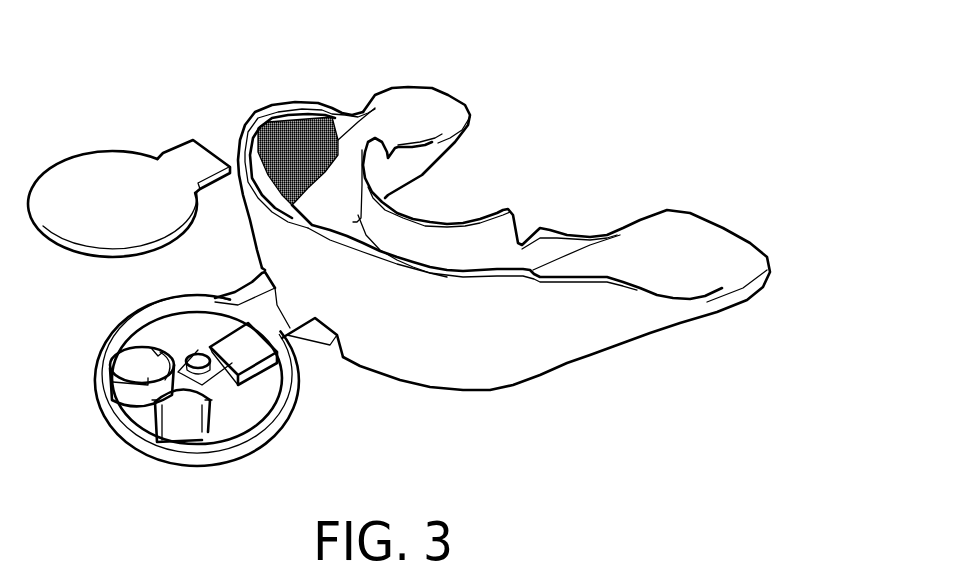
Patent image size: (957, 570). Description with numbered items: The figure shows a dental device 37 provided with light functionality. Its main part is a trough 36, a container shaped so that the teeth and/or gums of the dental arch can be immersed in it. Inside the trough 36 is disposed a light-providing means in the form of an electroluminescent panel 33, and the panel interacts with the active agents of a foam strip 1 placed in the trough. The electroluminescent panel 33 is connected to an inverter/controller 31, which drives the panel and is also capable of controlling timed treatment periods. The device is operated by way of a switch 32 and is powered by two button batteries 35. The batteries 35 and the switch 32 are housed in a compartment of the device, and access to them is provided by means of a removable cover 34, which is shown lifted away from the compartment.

The foam strip 1 is at (310, 145).
The inverter/controller 31 is at (242, 347).
The switch 32 is at (198, 348).
The electroluminescent panel 33 is at (253, 118).
The removable cover 34 is at (78, 190).
The button batteries 35 is at (138, 365).
The trough 36 is at (430, 108).
The dental device 37 is at (551, 407).